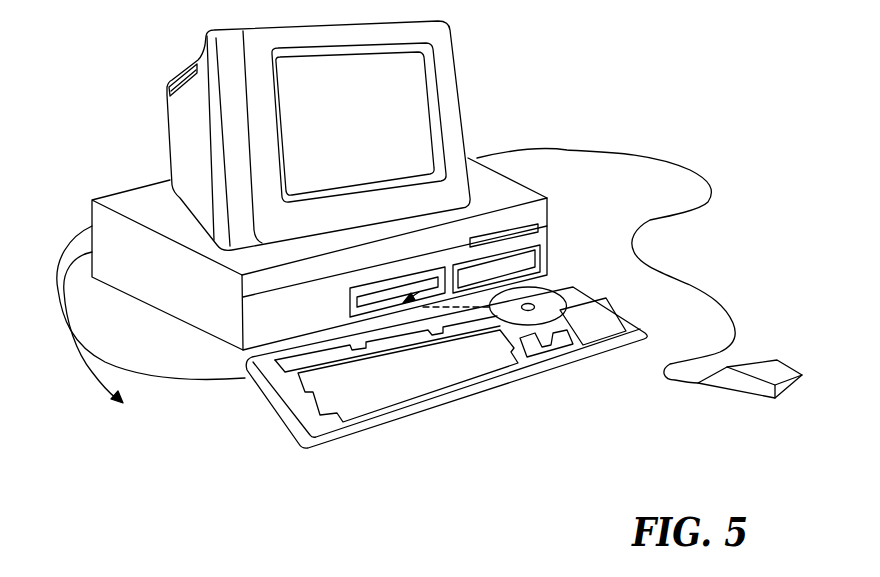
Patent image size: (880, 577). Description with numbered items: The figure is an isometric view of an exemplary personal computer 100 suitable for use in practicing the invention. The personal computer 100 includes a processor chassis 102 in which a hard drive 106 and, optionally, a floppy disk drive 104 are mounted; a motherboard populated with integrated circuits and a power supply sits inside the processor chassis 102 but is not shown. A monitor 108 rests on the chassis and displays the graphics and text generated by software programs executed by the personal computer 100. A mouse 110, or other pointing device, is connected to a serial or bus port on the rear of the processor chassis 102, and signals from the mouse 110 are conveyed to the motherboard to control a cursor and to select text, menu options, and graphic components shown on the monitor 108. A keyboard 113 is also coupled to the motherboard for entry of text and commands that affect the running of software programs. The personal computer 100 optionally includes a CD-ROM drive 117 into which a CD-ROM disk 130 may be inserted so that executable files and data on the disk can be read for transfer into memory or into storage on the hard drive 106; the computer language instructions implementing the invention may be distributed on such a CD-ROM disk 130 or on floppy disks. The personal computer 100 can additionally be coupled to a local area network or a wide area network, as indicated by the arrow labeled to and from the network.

The personal computer 100 is at (448, 259).
The processor chassis 102 is at (546, 233).
The floppy disk drive 104 is at (500, 232).
The hard drive 106 is at (517, 262).
The monitor 108 is at (462, 83).
The mouse 110 is at (775, 398).
The keyboard 113 is at (540, 383).
The CD-ROM drive 117 is at (350, 306).
The CD-ROM disk 130 is at (565, 308).